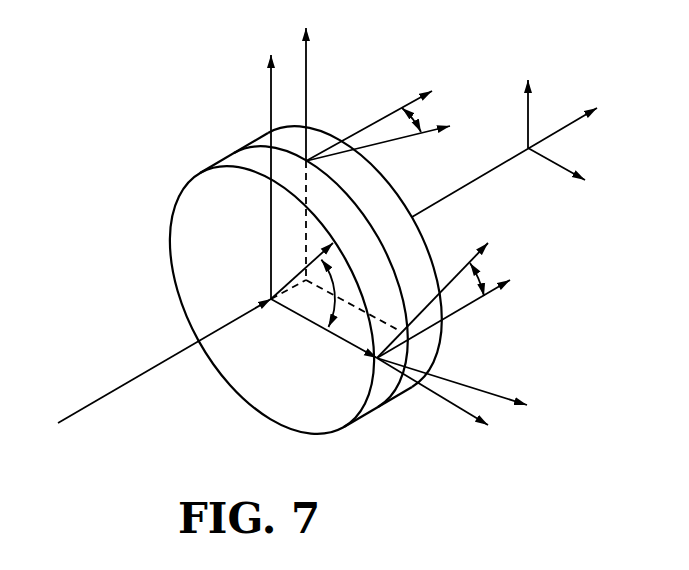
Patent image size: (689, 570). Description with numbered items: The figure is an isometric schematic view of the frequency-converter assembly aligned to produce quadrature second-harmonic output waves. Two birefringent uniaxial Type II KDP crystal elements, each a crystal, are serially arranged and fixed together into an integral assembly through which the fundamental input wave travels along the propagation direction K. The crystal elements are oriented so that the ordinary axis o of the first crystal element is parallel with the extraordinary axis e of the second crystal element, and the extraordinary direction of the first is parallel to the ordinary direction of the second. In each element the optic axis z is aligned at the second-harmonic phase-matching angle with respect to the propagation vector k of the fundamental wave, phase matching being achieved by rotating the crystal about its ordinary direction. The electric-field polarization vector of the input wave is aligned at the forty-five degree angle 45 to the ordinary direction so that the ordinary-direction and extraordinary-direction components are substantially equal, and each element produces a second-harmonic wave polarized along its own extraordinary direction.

The Type II KDP crystal element crystal is at (285, 297).
The propagation vector K is at (78, 415).
The extraordinary axis e is at (270, 85).
The ordinary axis o is at (455, 443).
The propagation vector k is at (389, 77).
The optic axis z is at (410, 135).
The forty-five degree angle 45 is at (328, 330).